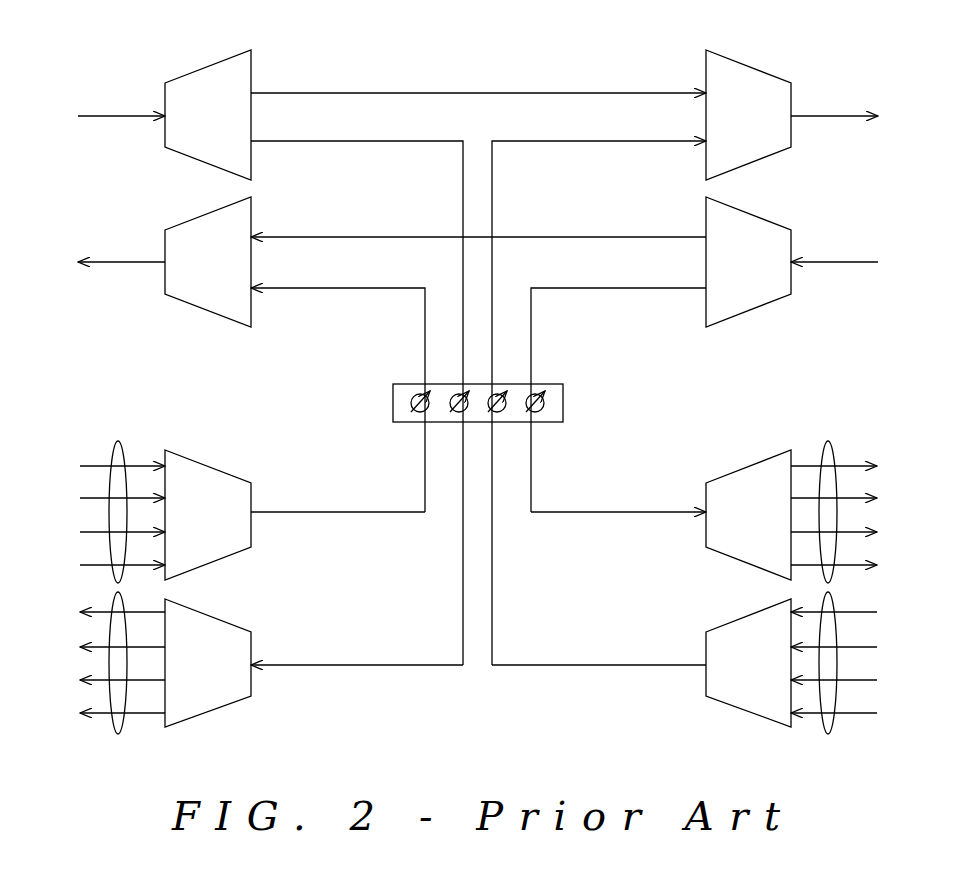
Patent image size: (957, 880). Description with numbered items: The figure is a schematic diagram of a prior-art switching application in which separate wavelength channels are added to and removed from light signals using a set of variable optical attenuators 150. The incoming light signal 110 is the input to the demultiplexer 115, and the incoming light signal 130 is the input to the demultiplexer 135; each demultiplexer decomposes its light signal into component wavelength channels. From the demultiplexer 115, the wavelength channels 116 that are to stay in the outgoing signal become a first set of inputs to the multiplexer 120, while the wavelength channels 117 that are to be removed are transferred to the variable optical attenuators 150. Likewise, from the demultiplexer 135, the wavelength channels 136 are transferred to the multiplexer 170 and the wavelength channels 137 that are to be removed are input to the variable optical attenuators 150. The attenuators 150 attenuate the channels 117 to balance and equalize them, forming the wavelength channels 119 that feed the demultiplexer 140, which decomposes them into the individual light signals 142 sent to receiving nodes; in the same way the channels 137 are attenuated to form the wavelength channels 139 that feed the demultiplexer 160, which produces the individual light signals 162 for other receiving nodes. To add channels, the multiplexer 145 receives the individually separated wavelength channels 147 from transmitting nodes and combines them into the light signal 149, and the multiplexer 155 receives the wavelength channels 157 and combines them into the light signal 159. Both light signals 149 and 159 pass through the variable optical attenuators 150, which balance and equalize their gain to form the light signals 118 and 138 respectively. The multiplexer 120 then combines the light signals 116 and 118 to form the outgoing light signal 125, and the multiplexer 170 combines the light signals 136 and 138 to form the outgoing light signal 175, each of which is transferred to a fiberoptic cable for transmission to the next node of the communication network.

The light signal 110 is at (118, 116).
The demultiplexer 115 is at (210, 65).
The wavelength channels 116 is at (275, 93).
The wavelength channels 117 is at (270, 141).
The light signal 118 is at (650, 141).
The wavelength channels 119 is at (302, 665).
The multiplexer 120 is at (745, 65).
The light signal 125 is at (838, 116).
The light signal 130 is at (838, 260).
The demultiplexer 135 is at (748, 310).
The wavelength channels 136 is at (560, 237).
The wavelength channels 137 is at (570, 288).
The light signal 138 is at (348, 288).
The wavelength channels 139 is at (655, 512).
The demultiplexer 140 is at (203, 720).
The individual light signals 142 is at (108, 728).
The multiplexer 145 is at (752, 722).
The wavelength channels 147 is at (847, 728).
The light signal 149 is at (655, 665).
The variable optical attenuators 150 is at (563, 403).
The multiplexer 155 is at (205, 462).
The wavelength channels 157 is at (108, 452).
The light signal 159 is at (292, 512).
The demultiplexer 160 is at (752, 462).
The individual light signals 162 is at (847, 452).
The multiplexer 170 is at (235, 323).
The light signal 175 is at (118, 260).